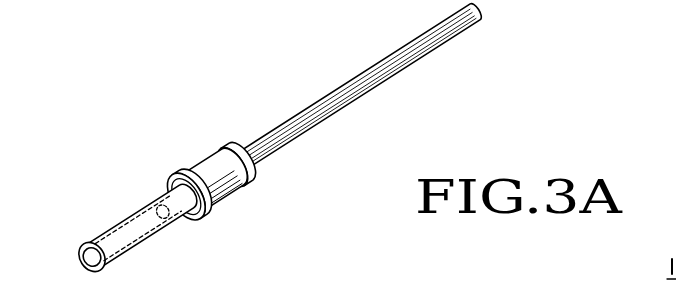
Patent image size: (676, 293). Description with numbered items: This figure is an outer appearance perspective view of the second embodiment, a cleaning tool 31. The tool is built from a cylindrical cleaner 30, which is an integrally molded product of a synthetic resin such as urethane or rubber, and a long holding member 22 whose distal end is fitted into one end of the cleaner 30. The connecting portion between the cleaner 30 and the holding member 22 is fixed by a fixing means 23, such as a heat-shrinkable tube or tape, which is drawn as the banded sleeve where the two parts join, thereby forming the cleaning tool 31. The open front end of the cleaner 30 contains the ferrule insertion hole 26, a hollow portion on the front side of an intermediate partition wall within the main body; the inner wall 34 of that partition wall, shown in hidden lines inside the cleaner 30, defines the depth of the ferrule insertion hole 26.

The cleaning tool 31 is at (269, 147).
The cleaner 30 is at (127, 203).
The ferrule insertion hole 26 is at (108, 233).
The inner wall 34 is at (166, 221).
The holding member 22 is at (302, 135).
The fixing means 23 is at (225, 198).